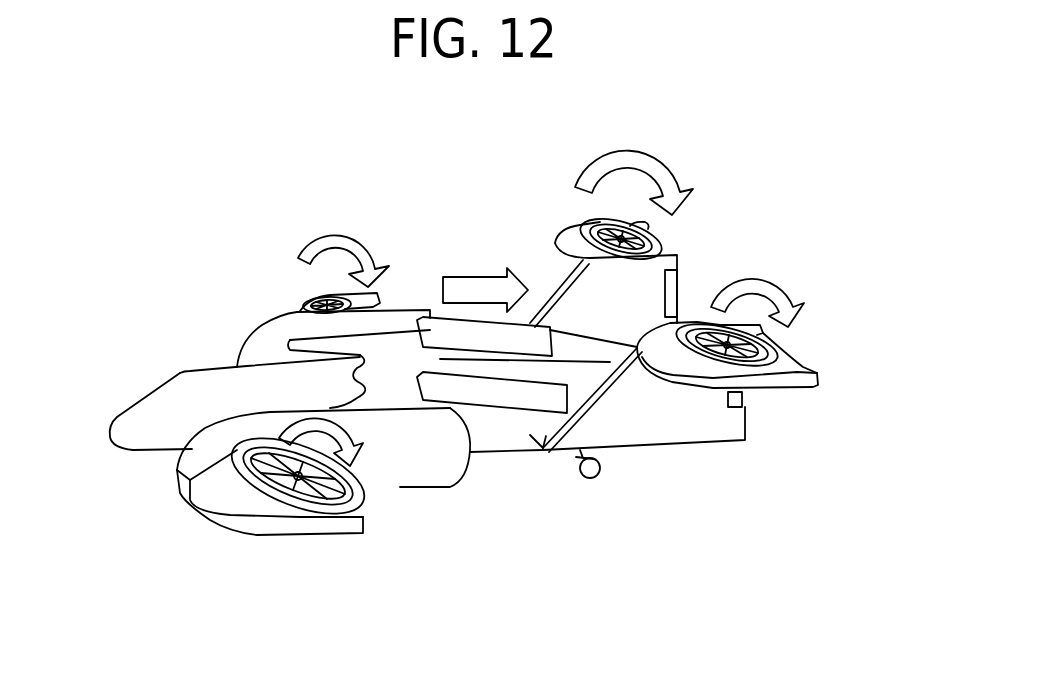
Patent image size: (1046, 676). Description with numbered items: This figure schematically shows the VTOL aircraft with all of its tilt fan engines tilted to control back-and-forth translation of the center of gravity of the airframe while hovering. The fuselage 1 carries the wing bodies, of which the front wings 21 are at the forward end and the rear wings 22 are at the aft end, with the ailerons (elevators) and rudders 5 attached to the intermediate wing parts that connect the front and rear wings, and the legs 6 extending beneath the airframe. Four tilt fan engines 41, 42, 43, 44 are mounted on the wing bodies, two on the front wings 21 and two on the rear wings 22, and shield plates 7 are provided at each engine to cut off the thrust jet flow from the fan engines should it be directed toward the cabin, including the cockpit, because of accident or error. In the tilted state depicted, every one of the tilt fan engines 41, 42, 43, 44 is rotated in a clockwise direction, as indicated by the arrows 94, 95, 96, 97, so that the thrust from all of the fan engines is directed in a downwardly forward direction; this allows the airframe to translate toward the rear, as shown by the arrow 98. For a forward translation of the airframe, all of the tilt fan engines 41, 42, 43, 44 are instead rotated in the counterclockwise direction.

The fuselage 1 is at (142, 405).
The shield plates 7 is at (265, 337).
The front wings 21 is at (147, 522).
The rear wings 22 is at (648, 230).
The tilt fan engine 41 is at (318, 296).
The tilt fan engine 42 is at (368, 510).
The tilt fan engine 43 is at (583, 220).
The tilt fan engine 44 is at (787, 357).
The ailerons (elevators) and rudders 5 is at (677, 292).
The legs 6 is at (595, 477).
The arrow 94 is at (342, 240).
The arrow 95 is at (365, 475).
The arrow 96 is at (632, 155).
The arrow 97 is at (793, 297).
The arrow 98 is at (458, 285).